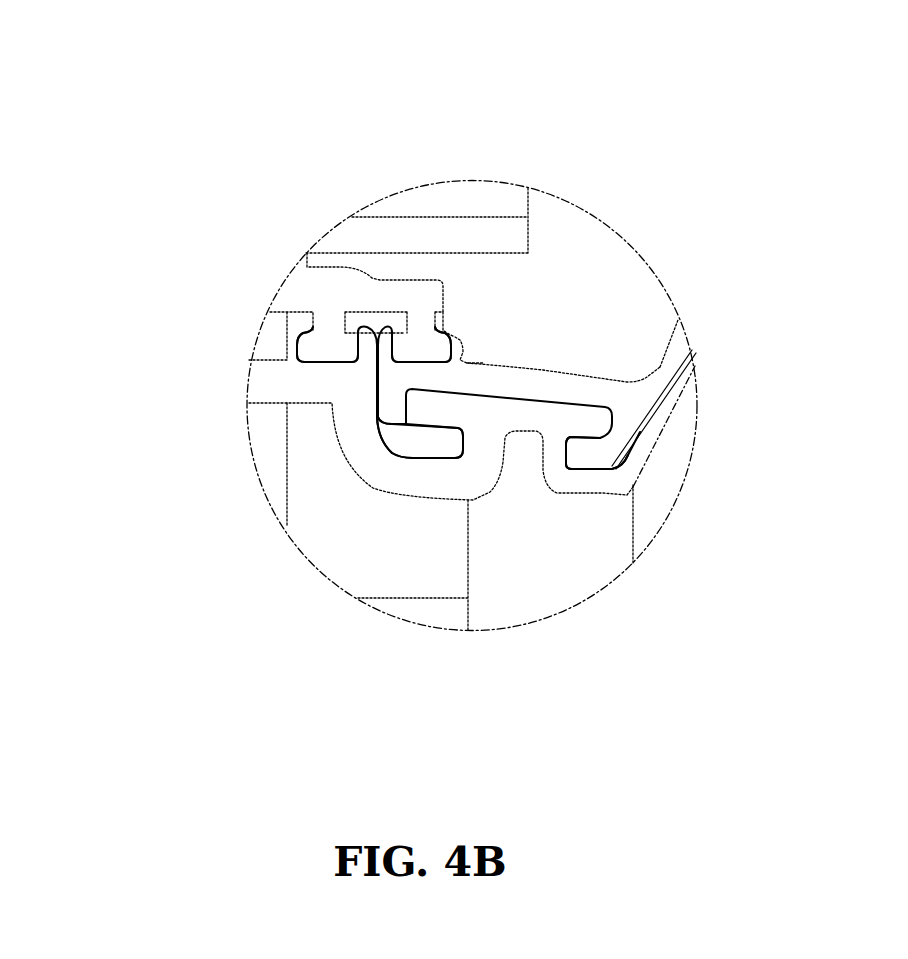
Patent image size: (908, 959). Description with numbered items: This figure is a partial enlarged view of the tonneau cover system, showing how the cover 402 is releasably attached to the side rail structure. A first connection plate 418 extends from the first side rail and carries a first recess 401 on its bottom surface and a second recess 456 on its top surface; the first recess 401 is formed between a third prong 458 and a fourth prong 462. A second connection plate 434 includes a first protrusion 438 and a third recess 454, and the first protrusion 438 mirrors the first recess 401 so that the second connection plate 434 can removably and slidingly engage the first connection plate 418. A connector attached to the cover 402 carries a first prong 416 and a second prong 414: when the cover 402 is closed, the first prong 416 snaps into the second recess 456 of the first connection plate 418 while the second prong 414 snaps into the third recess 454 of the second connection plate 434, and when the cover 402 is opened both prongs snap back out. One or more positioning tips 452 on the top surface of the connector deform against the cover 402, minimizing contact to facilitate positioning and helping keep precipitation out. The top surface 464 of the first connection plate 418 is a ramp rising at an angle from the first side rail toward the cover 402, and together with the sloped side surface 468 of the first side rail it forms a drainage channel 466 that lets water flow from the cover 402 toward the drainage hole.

The first recess 401 is at (408, 390).
The cover 402 is at (392, 227).
The second prong 414 is at (320, 343).
The first prong 416 is at (418, 345).
The first connection plate 418 is at (633, 394).
The second connection plate 434 is at (565, 487).
The first protrusion 438 is at (437, 462).
The positioning tips 452 is at (343, 260).
The third recess 454 is at (323, 360).
The second recess 456 is at (418, 358).
The third prong 458 is at (423, 438).
The fourth prong 462 is at (600, 457).
The top surface 464 is at (550, 373).
The drainage channel 466 is at (619, 353).
The side surface 468 is at (662, 350).